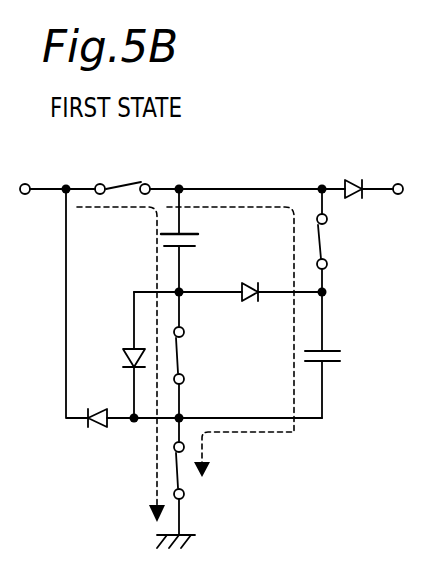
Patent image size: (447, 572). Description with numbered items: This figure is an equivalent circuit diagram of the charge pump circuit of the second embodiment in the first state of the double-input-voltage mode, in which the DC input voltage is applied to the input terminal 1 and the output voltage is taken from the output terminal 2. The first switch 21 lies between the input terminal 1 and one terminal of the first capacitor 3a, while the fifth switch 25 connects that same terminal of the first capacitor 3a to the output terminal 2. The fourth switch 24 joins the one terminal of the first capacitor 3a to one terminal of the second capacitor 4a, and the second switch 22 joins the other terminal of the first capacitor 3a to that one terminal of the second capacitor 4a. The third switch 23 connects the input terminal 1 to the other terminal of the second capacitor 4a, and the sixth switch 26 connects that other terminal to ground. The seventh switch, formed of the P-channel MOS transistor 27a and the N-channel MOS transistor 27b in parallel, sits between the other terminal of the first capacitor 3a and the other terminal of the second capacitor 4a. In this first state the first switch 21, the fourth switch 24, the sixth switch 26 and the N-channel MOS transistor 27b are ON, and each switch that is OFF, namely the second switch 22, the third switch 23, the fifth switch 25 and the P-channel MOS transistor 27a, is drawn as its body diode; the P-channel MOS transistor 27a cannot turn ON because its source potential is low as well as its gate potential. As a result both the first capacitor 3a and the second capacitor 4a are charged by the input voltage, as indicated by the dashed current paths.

The input terminal 1 is at (25, 183).
The output terminal 2 is at (400, 183).
The first switch 21 is at (122, 185).
The fifth switch 25 is at (348, 181).
The fourth switch 24 is at (324, 240).
The first capacitor 3a is at (202, 238).
The second switch 22 is at (253, 302).
The second capacitor 4a is at (337, 356).
The P-channel MOS transistor 27a is at (128, 346).
The N-channel MOS transistor 27b is at (181, 360).
The third switch 23 is at (94, 428).
The sixth switch 26 is at (181, 477).